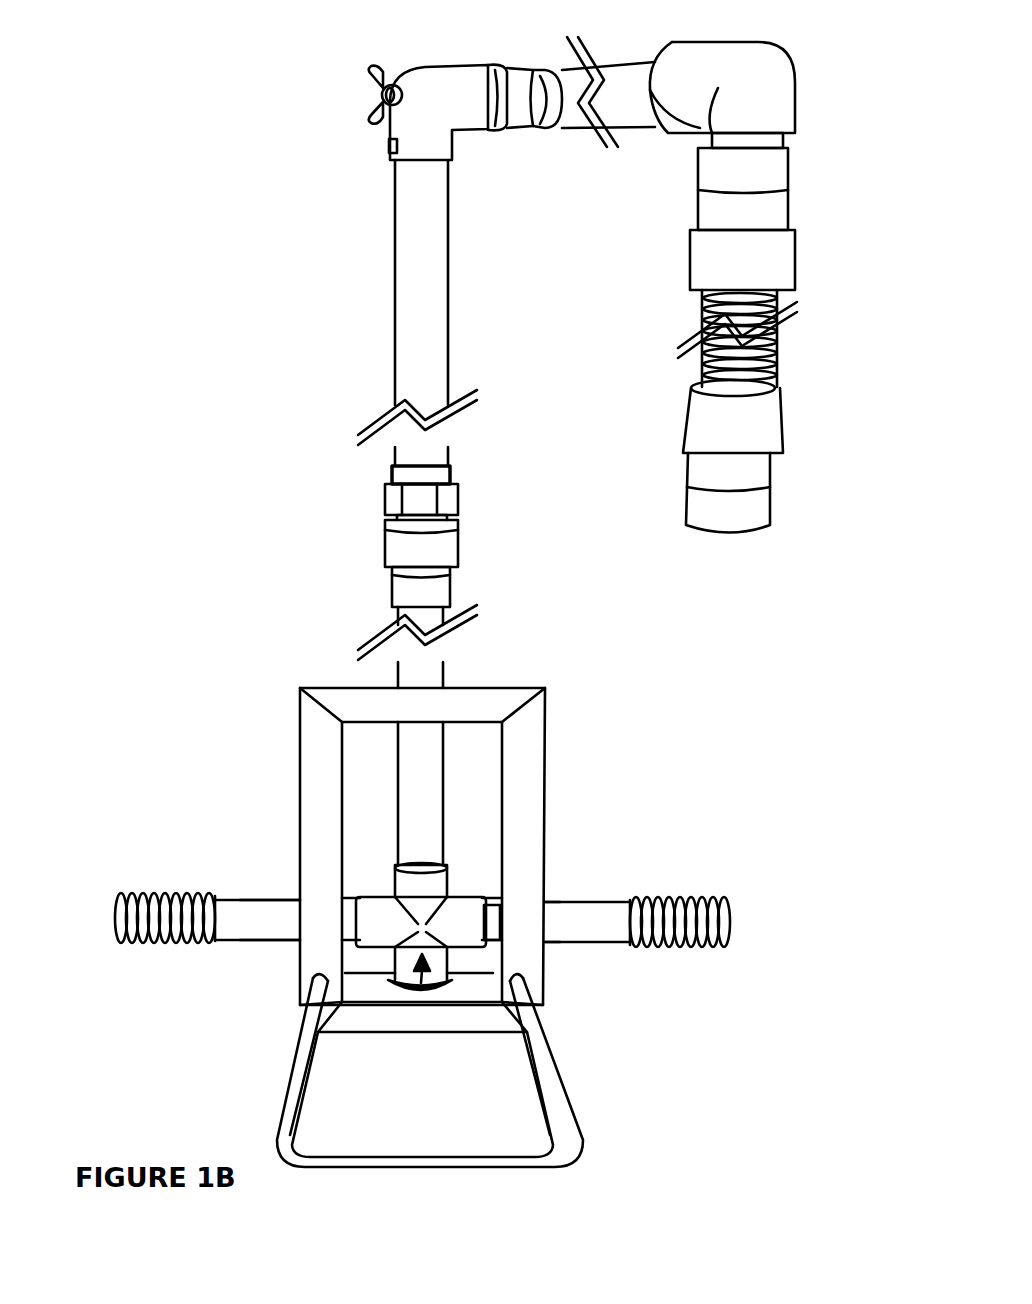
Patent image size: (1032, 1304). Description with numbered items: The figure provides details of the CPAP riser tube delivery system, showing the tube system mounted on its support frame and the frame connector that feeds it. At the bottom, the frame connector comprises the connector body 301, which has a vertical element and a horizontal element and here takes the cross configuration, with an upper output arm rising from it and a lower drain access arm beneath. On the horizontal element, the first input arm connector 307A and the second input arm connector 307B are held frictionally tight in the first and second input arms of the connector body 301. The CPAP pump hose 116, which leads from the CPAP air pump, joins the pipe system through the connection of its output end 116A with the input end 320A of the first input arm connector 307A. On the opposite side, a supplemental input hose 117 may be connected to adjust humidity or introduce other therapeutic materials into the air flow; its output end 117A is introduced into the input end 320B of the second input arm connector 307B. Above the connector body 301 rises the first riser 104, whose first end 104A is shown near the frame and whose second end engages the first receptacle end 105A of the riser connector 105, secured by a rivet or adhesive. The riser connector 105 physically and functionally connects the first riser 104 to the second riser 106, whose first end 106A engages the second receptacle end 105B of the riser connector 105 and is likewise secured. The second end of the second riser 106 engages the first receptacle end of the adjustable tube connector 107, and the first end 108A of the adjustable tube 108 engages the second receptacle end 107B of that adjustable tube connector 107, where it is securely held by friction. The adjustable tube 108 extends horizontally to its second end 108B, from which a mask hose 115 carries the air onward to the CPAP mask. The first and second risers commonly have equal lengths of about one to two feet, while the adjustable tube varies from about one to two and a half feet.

The adjustable tube connector 107 is at (410, 72).
The second receptacle end of adjustable tube connector 107B is at (488, 72).
The first end of adjustable tube 108A is at (563, 122).
The adjustable tube 108 is at (656, 132).
The second end of adjustable tube 108B is at (708, 46).
The mask hose 115 is at (783, 357).
The second riser 106 is at (450, 287).
The first end of second riser 106A is at (452, 463).
The riser connector 105 is at (350, 531).
The second receptacle end of riser connector 105B is at (388, 478).
The first receptacle end of riser connector 105A is at (388, 588).
The first end of first riser 104A is at (400, 603).
The first riser 104 is at (397, 680).
The input end of second input arm connector 320B is at (347, 898).
The input end of first input arm connector 320A is at (625, 900).
The first input arm connector 307A is at (540, 902).
The second input arm connector 307B is at (257, 943).
The connector body 301 is at (417, 990).
The CPAP pump hose 116 is at (713, 948).
The output end of CPAP pump hose 116A is at (630, 902).
The supplemental input hose 117 is at (115, 942).
The output end of supplemental input hose 117A is at (207, 900).